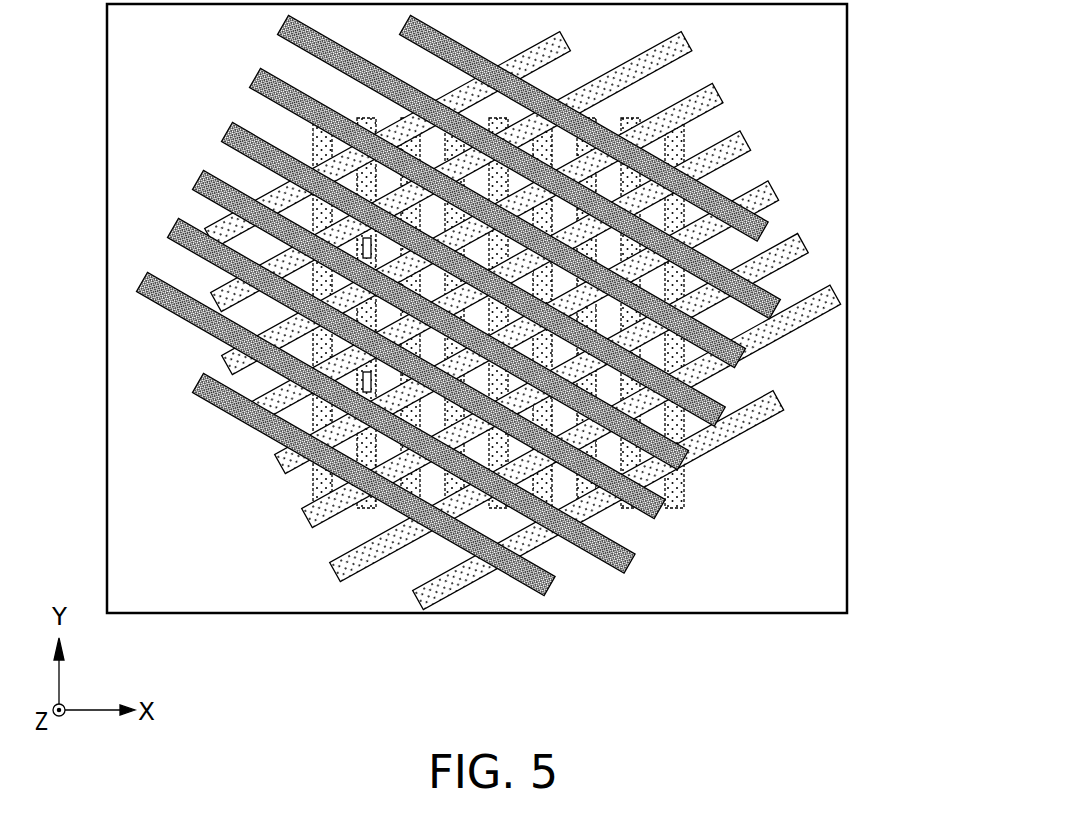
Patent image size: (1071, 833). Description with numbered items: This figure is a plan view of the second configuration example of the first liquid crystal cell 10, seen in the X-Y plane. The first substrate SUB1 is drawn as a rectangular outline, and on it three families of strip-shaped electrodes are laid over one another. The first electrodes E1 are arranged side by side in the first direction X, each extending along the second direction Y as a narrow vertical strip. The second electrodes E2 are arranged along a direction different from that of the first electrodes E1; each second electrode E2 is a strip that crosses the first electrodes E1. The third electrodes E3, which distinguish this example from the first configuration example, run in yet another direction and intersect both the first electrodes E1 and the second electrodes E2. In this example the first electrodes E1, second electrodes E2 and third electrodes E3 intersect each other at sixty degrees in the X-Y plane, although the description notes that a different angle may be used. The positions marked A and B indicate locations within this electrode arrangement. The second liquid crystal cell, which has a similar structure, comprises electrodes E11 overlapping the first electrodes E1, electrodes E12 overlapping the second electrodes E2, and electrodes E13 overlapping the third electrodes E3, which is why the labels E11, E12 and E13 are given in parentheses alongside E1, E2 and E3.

The first liquid crystal cell 10 is at (524, 348).
The first substrate SUB1 is at (848, 507).
The first electrodes E1 is at (442, 342).
The electrodes E11 is at (400, 505).
The second electrodes E2 is at (523, 321).
The electrodes E12 is at (682, 40).
The third electrodes E3 is at (451, 305).
The electrodes E13 is at (138, 277).
The position A is at (381, 250).
The position B is at (380, 385).